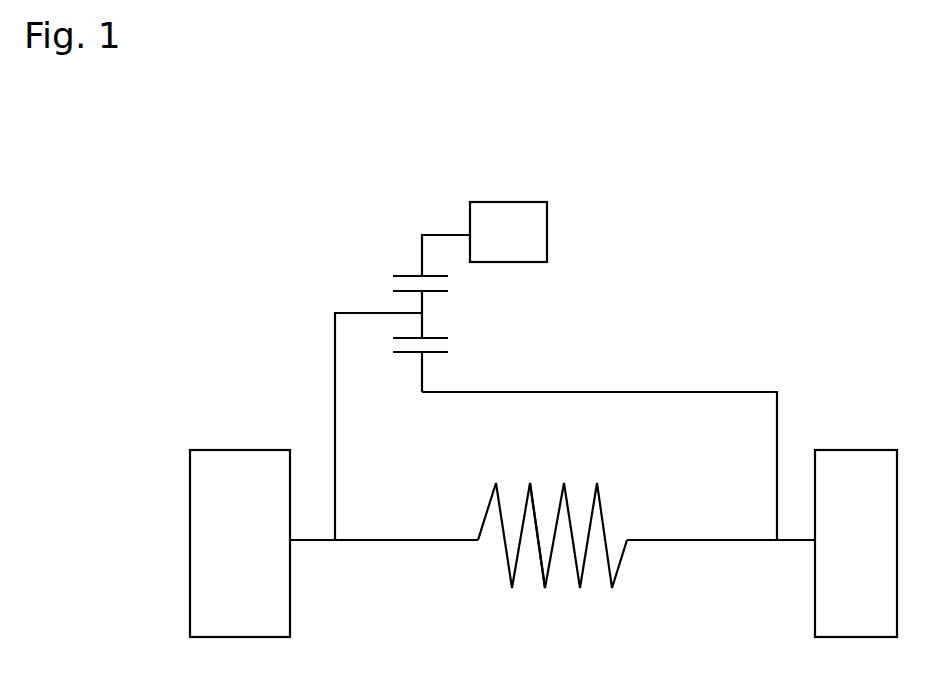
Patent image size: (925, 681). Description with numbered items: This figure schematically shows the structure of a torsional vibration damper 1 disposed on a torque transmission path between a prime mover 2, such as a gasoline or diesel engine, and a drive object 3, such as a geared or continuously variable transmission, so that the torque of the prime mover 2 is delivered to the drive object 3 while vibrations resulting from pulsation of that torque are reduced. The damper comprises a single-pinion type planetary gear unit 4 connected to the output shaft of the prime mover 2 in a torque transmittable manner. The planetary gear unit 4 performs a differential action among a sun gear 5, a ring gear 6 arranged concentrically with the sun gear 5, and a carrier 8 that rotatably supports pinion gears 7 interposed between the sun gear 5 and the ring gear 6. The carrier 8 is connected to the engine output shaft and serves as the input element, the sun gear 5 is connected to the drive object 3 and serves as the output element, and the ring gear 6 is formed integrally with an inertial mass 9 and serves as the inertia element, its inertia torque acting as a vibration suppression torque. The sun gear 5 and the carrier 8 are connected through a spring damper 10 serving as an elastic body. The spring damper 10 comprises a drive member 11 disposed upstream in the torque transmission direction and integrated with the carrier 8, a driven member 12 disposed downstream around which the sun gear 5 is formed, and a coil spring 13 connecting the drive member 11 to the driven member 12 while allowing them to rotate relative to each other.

The torsional vibration damper 1 is at (604, 238).
The prime mover 2 is at (244, 450).
The drive object 3 is at (861, 450).
The planetary gear unit 4 is at (412, 297).
The sun gear 5 is at (405, 354).
The ring gear 6 is at (410, 275).
The pinion gears 7 is at (440, 342).
The carrier 8 is at (370, 313).
The inertial mass 9 is at (516, 202).
The spring damper 10 is at (505, 592).
The drive member 11 is at (405, 543).
The driven member 12 is at (677, 543).
The coil spring 13 is at (545, 590).